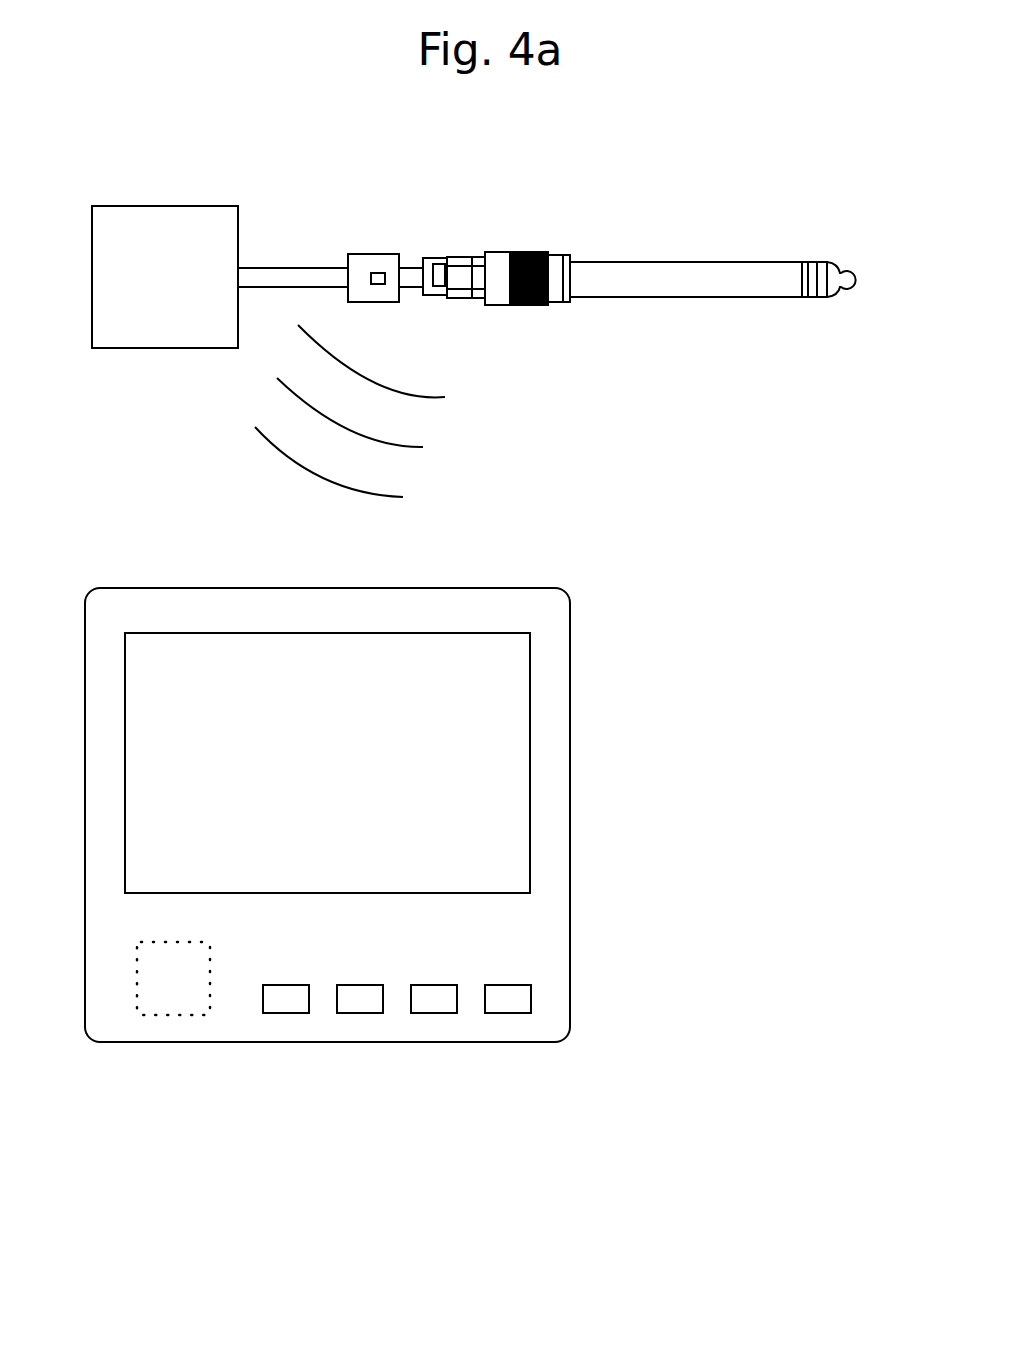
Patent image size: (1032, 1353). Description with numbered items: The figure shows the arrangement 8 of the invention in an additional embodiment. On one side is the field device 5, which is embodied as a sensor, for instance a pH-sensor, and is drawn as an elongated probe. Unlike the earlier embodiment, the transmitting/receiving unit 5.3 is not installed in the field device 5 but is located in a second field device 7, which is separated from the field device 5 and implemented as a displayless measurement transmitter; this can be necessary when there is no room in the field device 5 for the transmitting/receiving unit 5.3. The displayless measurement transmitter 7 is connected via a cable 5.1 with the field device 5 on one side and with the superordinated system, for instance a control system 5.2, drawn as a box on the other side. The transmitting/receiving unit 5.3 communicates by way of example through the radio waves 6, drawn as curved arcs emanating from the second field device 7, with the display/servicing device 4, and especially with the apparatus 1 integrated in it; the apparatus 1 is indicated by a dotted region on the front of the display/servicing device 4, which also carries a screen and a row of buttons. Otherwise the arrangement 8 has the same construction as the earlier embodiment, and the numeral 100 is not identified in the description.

The apparatus 1 is at (174, 1003).
The display/servicing device 4 is at (569, 833).
The field device 5 is at (585, 267).
The cable 5.1 is at (275, 264).
The control system 5.2 is at (181, 232).
The transmitting/receiving unit 5.3 is at (378, 273).
The radio waves 6 is at (476, 470).
The second field device 7 is at (413, 276).
The arrangement 8 is at (728, 647).
The measuring device 100 is at (408, 879).